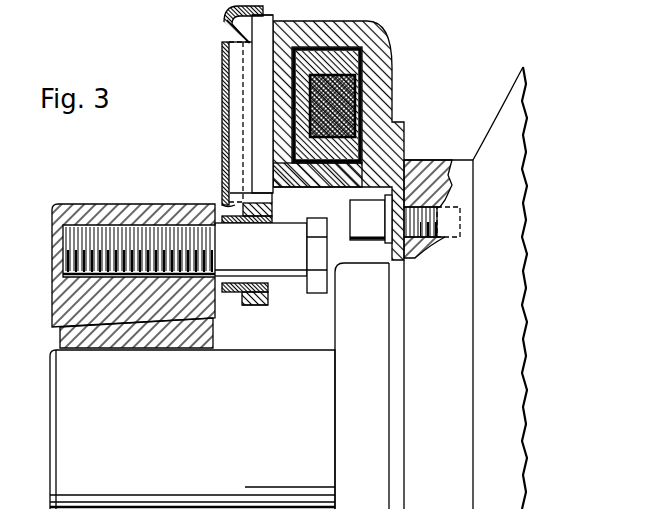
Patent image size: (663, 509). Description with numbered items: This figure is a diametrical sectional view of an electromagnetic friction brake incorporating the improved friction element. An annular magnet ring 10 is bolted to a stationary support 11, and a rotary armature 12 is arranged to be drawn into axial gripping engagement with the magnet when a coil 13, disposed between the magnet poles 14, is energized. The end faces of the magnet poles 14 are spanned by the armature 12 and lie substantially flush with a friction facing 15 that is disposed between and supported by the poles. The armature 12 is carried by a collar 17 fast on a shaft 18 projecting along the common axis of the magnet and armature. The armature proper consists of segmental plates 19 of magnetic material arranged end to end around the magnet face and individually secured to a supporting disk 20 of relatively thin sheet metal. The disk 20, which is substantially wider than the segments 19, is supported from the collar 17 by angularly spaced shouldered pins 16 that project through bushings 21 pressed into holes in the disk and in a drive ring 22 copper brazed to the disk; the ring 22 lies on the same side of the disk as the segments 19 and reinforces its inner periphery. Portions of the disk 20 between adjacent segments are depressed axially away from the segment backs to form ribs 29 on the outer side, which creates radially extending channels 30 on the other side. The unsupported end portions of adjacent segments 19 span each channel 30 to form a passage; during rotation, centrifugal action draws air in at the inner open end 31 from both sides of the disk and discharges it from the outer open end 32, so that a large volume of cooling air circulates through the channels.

The magnet ring 10 is at (388, 50).
The stationary support 11 is at (432, 158).
The rotary armature 12 is at (279, 10).
The coil 13 is at (363, 95).
The magnet poles 14 is at (321, 33).
The friction facing 15 is at (281, 143).
The shouldered pins 16 is at (292, 286).
The collar 17 is at (67, 303).
The shaft 18 is at (67, 365).
The segmental plates 19 is at (256, 163).
The supporting disk 20 is at (237, 292).
The bushings 21 is at (270, 295).
The drive ring 22 is at (250, 305).
The ribs 29 is at (224, 72).
The channels 30 is at (232, 92).
The inner open end 31 is at (222, 210).
The outer open end 32 is at (243, 42).